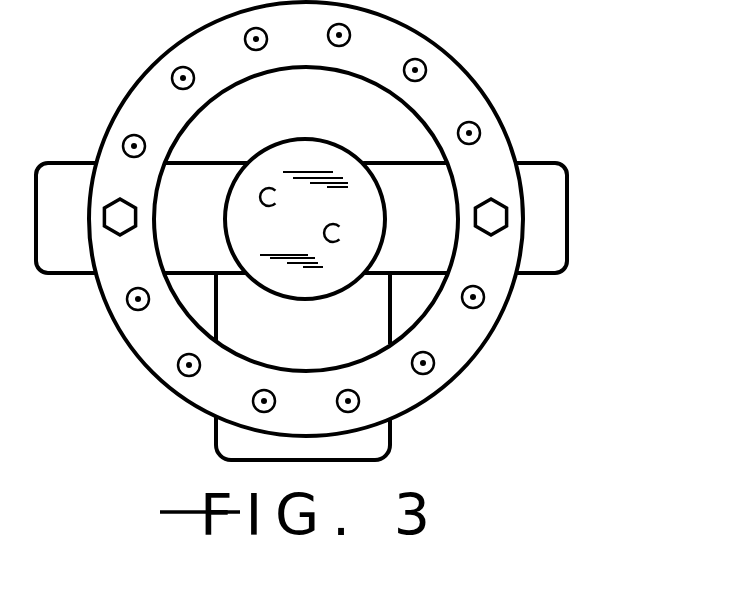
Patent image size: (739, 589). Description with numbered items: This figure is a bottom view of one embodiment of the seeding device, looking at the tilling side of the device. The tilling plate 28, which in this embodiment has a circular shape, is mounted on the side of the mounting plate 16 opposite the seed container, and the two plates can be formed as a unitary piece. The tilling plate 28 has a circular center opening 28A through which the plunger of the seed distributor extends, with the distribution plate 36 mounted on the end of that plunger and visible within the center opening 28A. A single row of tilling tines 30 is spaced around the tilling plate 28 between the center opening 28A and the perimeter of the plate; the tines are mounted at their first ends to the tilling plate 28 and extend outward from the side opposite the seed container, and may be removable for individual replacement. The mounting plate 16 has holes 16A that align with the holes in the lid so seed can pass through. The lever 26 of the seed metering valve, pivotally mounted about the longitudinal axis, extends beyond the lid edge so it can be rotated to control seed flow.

The mounting plate 16 is at (550, 223).
The holes 16A is at (342, 233).
The lever 26 is at (377, 443).
The tilling plate 28 is at (448, 70).
The center opening 28A is at (412, 137).
The tilling tines 30 is at (434, 361).
The distribution plate 36 is at (300, 148).